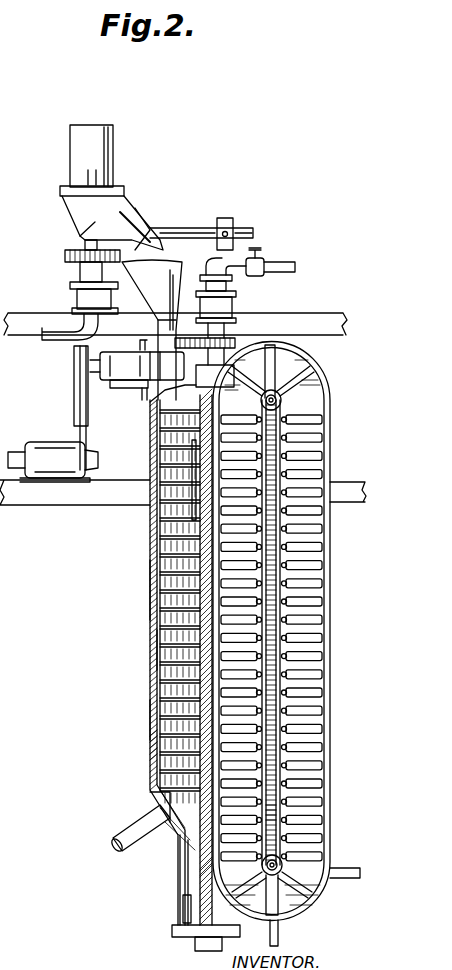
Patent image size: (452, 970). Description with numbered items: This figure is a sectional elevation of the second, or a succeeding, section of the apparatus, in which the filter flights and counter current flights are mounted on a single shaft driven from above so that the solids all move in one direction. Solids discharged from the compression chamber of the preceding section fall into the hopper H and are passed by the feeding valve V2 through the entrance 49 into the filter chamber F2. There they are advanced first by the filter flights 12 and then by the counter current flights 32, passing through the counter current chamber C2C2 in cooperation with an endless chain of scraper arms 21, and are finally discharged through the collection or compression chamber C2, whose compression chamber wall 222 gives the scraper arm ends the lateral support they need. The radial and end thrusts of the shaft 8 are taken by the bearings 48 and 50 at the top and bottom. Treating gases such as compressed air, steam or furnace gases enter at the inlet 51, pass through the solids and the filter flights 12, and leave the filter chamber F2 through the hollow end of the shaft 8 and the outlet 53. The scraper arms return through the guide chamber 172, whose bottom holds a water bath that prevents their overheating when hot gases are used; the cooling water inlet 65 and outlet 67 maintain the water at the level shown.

The outlet 53 is at (285, 263).
The bearing 48 is at (230, 320).
The hopper H is at (167, 264).
The entrance 49 is at (152, 396).
The feeding valve V2 is at (120, 368).
The filter flights 12 is at (152, 505).
The filter chamber F2 is at (153, 457).
The counter current chamber C2C2 is at (152, 583).
The counter current flights 32 is at (152, 648).
The shaft 8 is at (152, 715).
The gas inlet 51 is at (152, 828).
The collection or compression chamber C2 is at (183, 872).
The compression chamber wall 222 is at (183, 908).
The bearing 50 is at (195, 937).
The scraper arms 21 is at (330, 381).
The guide chamber 172 is at (330, 655).
The outlet 67 is at (351, 870).
The inlet 65 is at (281, 937).